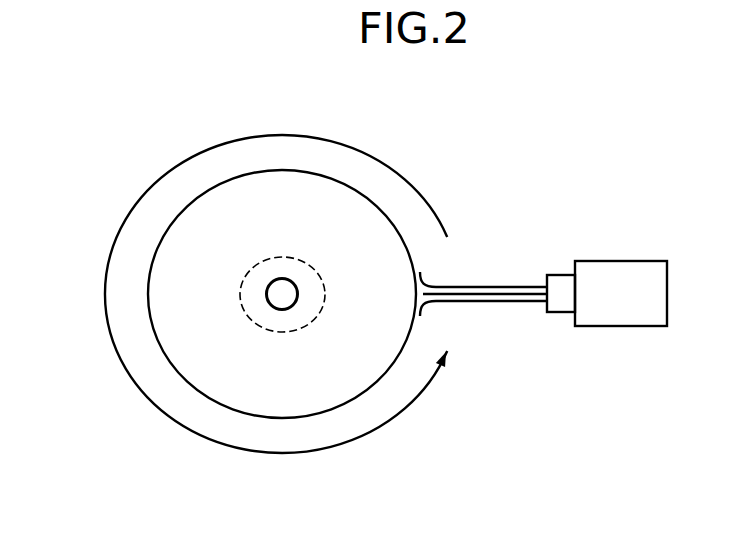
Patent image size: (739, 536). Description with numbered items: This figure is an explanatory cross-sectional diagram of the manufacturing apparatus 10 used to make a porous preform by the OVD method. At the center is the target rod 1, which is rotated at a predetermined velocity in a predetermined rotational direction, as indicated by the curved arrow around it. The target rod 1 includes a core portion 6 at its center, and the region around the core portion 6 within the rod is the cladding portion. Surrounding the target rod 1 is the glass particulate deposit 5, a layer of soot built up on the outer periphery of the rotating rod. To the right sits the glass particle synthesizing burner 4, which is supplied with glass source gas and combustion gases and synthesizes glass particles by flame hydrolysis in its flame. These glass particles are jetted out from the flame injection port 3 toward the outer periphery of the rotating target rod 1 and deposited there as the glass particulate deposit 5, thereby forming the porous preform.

The target rod 1 is at (284, 333).
The flame injection port 3 is at (559, 312).
The glass particle synthesizing burner 4 is at (620, 261).
The glass particulate deposit 5 is at (148, 293).
The core portion 6 is at (280, 279).
The manufacturing apparatus 10 is at (521, 190).